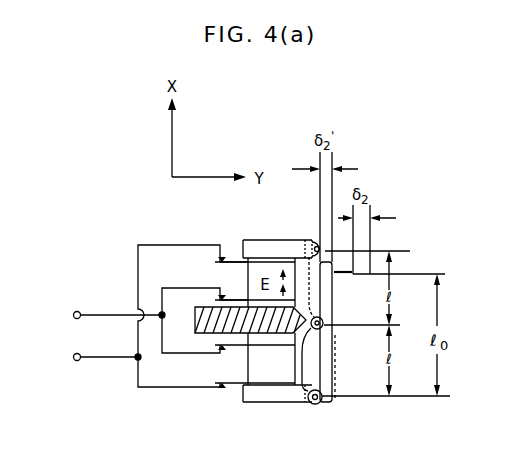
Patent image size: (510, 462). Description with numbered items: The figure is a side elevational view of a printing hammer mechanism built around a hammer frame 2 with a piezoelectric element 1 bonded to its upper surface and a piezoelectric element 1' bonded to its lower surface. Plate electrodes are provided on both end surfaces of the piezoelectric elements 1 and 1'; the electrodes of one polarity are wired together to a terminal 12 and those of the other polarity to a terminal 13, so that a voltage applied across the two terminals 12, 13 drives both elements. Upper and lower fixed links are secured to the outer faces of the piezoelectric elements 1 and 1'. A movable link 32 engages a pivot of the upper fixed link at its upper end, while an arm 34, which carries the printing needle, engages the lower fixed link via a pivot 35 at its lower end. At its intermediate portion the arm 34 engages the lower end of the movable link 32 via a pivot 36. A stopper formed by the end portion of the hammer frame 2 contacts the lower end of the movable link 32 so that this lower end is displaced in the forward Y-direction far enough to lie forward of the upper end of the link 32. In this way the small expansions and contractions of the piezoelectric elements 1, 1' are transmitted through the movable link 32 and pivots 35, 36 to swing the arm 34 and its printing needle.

The piezoelectric element 1 is at (263, 297).
The piezoelectric element 1' is at (277, 400).
The hammer frame 2 is at (193, 318).
The terminal 12 is at (73, 357).
The terminal 13 is at (72, 314).
The movable link 32 is at (318, 243).
The arm 34 is at (333, 372).
The pivot 35 is at (314, 405).
The pivot 36 is at (303, 404).